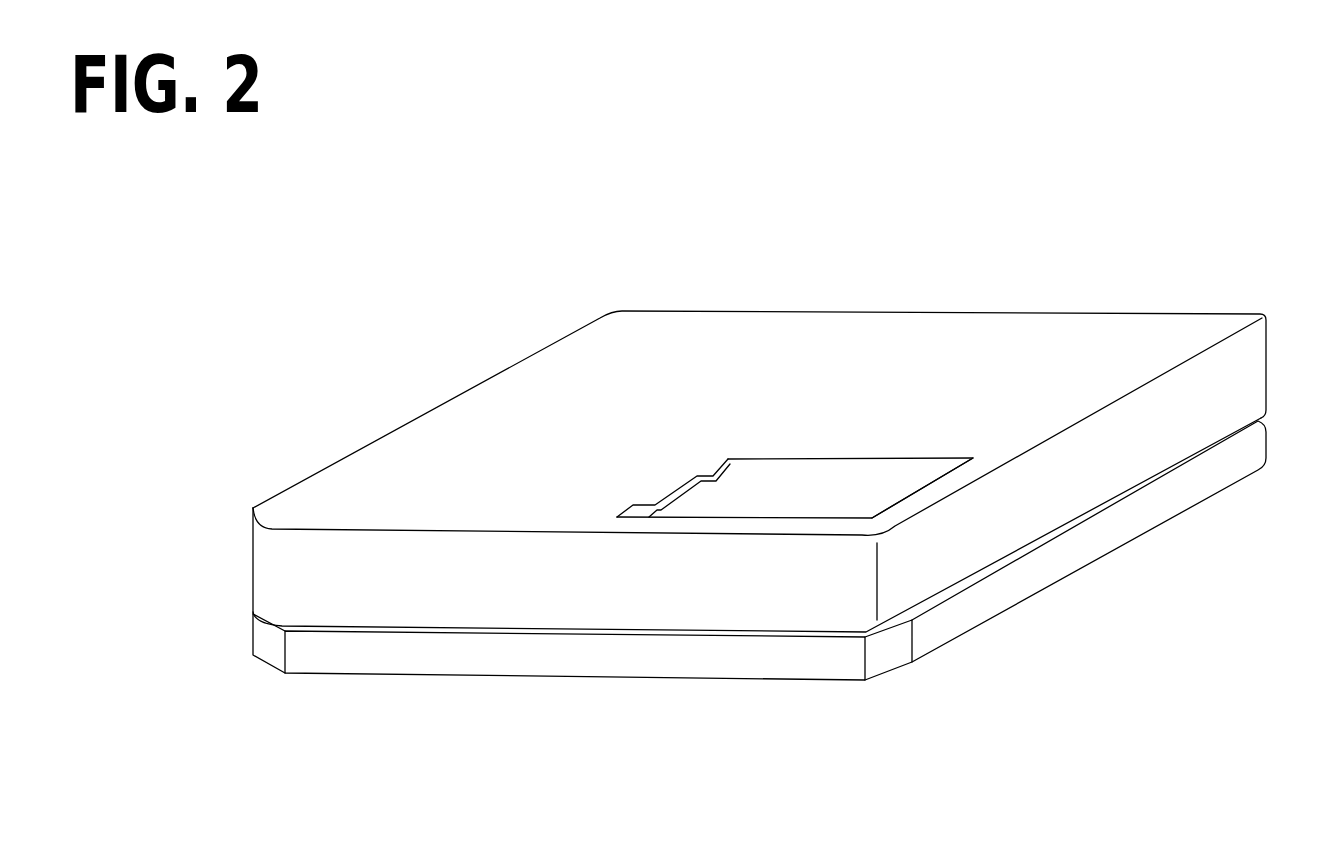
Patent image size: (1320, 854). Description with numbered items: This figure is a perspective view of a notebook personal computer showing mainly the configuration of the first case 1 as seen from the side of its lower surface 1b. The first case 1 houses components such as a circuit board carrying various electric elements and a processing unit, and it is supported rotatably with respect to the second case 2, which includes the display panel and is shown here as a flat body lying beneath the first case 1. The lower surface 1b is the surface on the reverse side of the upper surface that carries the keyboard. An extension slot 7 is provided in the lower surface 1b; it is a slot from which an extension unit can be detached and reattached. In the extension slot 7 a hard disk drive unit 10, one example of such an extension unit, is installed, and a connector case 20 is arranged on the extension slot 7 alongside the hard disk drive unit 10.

The first case 1 is at (1238, 376).
The lower surface 1b is at (523, 402).
The second case 2 is at (1238, 446).
The extension slot 7 is at (937, 482).
The hard disk drive unit 10 is at (783, 508).
The connector case 20 is at (625, 520).